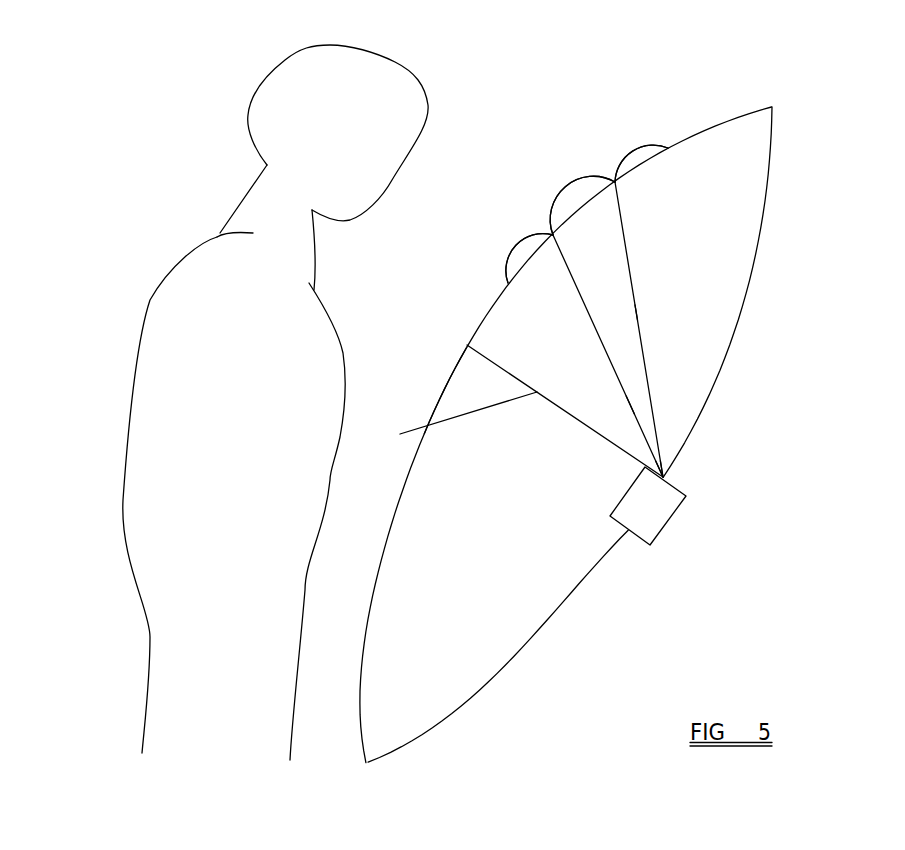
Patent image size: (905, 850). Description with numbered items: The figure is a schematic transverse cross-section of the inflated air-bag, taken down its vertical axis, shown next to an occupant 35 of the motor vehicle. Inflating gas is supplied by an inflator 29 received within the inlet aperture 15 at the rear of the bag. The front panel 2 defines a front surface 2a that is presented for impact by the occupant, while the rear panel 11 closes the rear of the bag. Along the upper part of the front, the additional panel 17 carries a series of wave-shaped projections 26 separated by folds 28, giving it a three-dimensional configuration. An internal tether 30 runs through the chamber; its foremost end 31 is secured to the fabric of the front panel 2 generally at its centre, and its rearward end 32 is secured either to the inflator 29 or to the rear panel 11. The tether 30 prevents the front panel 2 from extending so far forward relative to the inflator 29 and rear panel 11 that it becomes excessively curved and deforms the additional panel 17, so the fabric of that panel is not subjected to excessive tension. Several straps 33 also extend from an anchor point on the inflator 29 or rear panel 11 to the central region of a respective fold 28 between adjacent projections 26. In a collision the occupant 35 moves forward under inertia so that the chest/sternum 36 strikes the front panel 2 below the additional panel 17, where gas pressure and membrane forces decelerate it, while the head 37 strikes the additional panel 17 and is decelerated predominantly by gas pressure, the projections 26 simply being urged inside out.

The front panel 2 is at (720, 122).
The front surface 2a is at (432, 382).
The rear panel 11 is at (757, 251).
The inlet aperture 15 is at (626, 531).
The additional panel 17 is at (632, 113).
The wave-shaped projections 26 is at (517, 242).
The fold 28 is at (553, 235).
The inflator 29 is at (662, 507).
The internal tether 30 is at (404, 434).
The foremost end 31 is at (467, 345).
The rearward end 32 is at (673, 477).
The straps 33 is at (636, 312).
The occupant 35 is at (148, 246).
The chest/sternum 36 is at (340, 340).
The head 37 is at (283, 103).